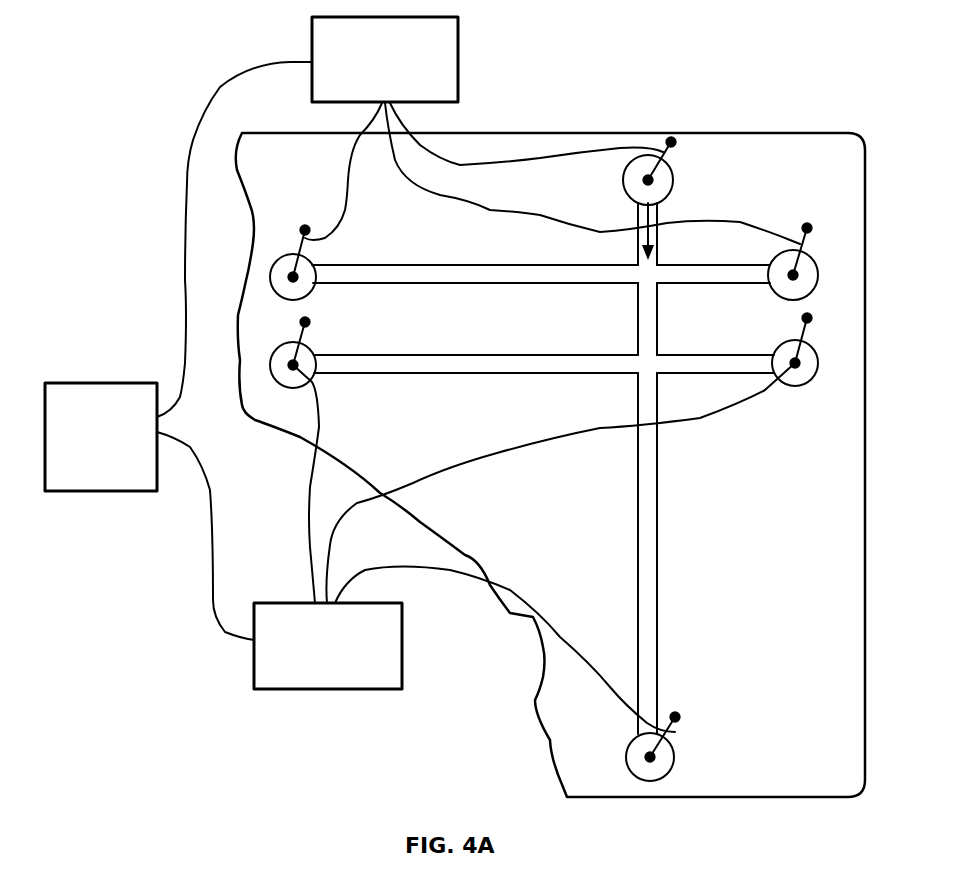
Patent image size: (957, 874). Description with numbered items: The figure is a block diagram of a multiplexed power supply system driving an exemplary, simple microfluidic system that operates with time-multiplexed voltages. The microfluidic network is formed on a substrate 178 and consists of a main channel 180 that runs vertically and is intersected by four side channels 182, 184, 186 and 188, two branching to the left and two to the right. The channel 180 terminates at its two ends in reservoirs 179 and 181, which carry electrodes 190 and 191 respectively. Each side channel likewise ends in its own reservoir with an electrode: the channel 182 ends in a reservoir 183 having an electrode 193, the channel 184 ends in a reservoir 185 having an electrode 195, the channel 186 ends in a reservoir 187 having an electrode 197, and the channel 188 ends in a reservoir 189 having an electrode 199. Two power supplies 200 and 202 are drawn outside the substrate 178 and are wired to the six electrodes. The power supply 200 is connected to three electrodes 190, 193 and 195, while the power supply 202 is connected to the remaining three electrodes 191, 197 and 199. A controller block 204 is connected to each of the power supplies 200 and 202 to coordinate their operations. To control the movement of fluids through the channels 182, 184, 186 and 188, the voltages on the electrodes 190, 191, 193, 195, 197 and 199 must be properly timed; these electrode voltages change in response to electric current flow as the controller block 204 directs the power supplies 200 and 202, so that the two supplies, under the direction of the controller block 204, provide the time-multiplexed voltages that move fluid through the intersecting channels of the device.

The substrate 178 is at (822, 777).
The reservoir 179 is at (664, 182).
The channel 180 is at (670, 206).
The reservoir 181 is at (667, 758).
The channel 182 is at (456, 252).
The reservoir 183 is at (288, 260).
The channel 184 is at (748, 297).
The reservoir 185 is at (805, 280).
The channel 186 is at (418, 388).
The reservoir 187 is at (308, 353).
The channel 188 is at (680, 340).
The reservoir 189 is at (792, 378).
The electrode 190 is at (677, 152).
The electrode 191 is at (672, 732).
The electrode 193 is at (297, 225).
The electrode 195 is at (813, 236).
The electrode 197 is at (301, 331).
The electrode 199 is at (812, 326).
The power supply 200 is at (458, 58).
The power supply 202 is at (320, 683).
The controller block 204 is at (98, 480).